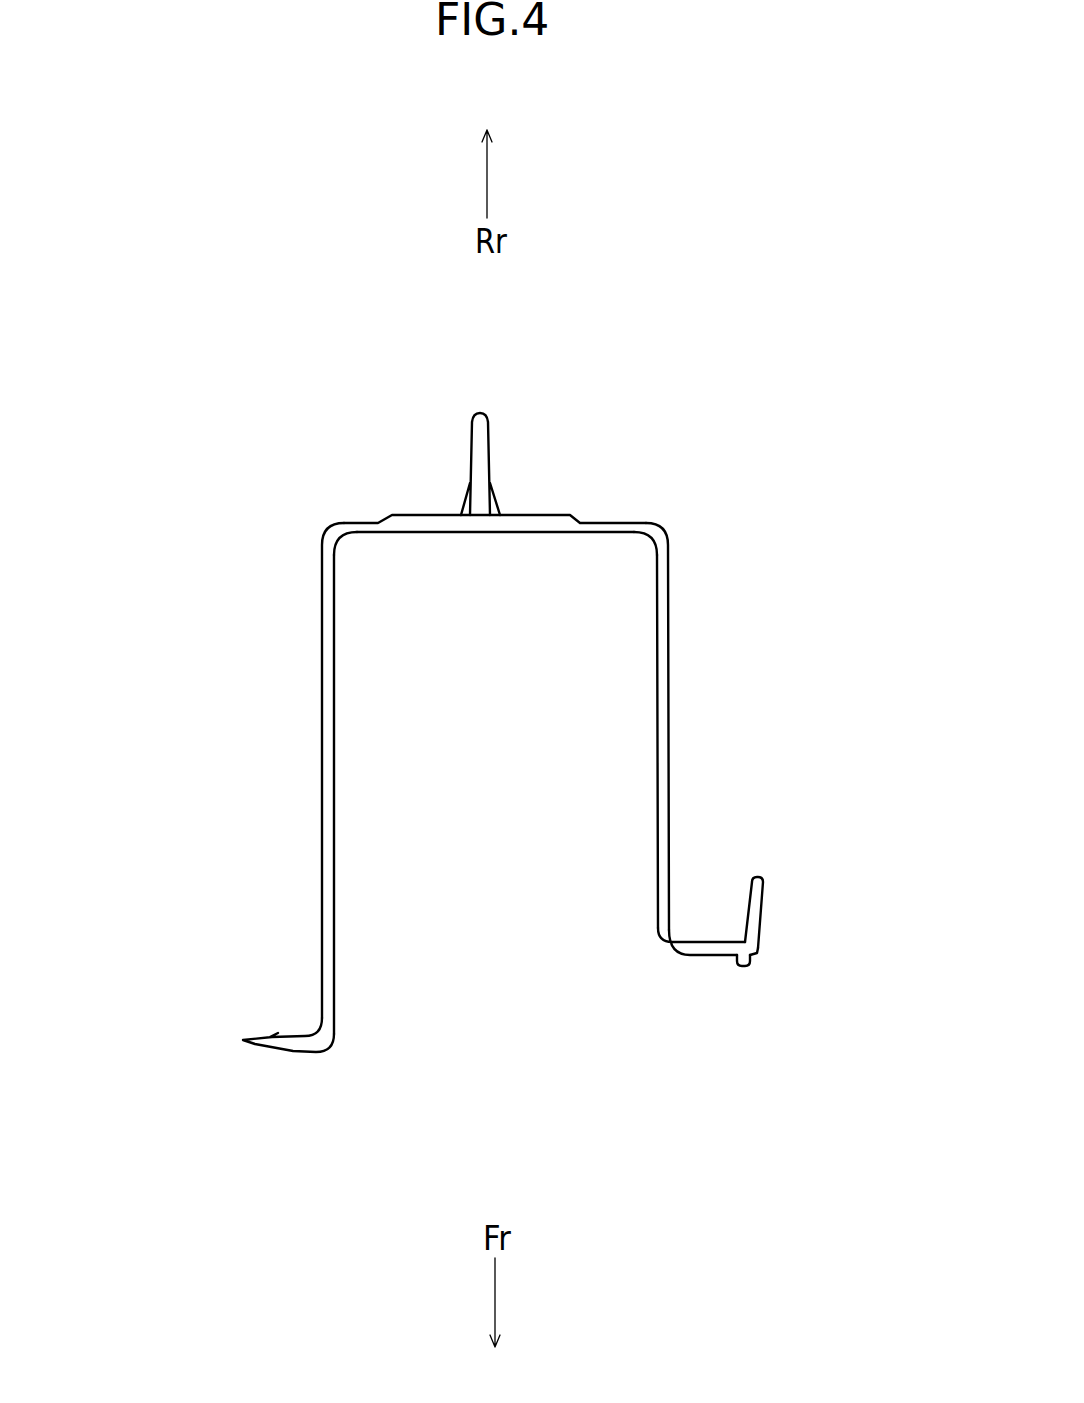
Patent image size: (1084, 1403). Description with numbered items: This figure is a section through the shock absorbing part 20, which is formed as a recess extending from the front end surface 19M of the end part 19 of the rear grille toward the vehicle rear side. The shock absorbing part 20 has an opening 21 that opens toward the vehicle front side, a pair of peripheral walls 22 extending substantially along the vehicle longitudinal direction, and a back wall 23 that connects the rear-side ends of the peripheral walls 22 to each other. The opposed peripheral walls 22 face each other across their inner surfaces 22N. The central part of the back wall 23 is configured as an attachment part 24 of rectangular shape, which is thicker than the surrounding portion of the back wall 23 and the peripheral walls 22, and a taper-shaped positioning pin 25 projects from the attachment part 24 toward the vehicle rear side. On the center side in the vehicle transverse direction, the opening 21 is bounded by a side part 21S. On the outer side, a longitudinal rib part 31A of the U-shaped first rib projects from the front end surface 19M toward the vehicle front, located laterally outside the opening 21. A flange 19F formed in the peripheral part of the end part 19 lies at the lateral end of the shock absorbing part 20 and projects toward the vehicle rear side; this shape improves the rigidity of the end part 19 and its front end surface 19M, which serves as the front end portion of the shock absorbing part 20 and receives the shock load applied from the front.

The shock absorbing part 20 is at (186, 467).
The opening 21 is at (509, 1017).
The peripheral walls 22 is at (750, 697).
The inner surfaces 22N is at (657, 773).
The back wall 23 is at (368, 521).
The attachment part 24 is at (450, 600).
The positioning pin 25 is at (558, 451).
The side part 21S is at (358, 1090).
The end part 19 is at (680, 1022).
The front end surface 19M is at (748, 1047).
The flange 19F is at (820, 927).
The longitudinal rib part 31A is at (787, 1000).